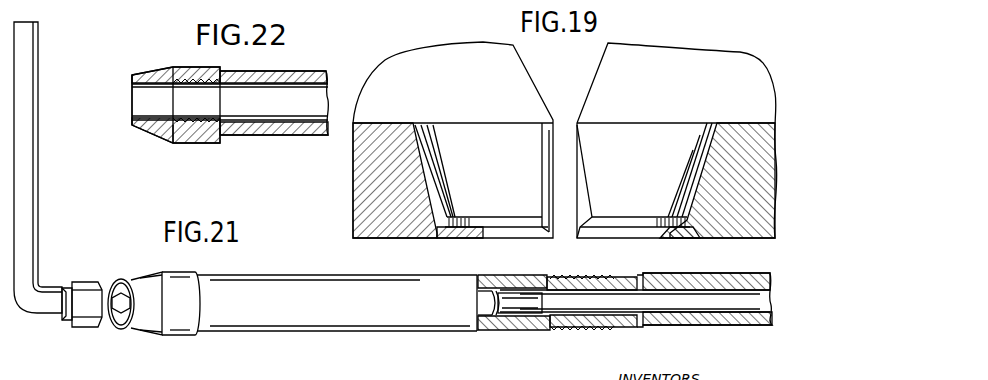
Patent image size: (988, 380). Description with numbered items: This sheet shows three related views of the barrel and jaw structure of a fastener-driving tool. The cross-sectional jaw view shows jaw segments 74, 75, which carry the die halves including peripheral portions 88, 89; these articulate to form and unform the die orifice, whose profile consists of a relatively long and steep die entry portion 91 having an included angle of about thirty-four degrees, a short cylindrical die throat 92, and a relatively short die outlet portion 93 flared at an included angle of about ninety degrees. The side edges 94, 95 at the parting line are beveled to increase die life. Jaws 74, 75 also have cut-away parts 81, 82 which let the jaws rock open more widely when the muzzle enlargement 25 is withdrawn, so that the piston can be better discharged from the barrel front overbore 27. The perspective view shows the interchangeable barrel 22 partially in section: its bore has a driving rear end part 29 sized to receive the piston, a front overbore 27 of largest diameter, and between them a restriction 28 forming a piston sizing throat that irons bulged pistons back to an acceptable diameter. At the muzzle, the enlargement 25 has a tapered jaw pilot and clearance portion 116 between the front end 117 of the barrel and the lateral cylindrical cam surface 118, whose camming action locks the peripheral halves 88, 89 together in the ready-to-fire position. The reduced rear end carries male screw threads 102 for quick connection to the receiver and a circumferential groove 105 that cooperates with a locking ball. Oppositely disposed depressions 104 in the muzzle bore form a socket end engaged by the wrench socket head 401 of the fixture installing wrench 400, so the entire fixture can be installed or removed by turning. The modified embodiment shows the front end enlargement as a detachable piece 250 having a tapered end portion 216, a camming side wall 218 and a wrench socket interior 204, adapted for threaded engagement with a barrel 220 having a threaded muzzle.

In FIG. 21, the interchangeable barrel 22 is at (325, 322).
In FIG. 21, the muzzle enlargement 25 is at (200, 268).
In FIG. 21, the barrel front overbore 27 is at (483, 301).
In FIG. 21, the restriction forming piston sizing throat 28 is at (527, 309).
In FIG. 21, the rear end part of barrel bore 29 is at (688, 311).
In FIG. 19, the jaw segment 74 is at (418, 45).
In FIG. 19, the jaw segment 75 is at (723, 43).
In FIG. 19, the cut-away part 81 is at (533, 65).
In FIG. 19, the cut-away part 82 is at (590, 66).
In FIG. 19, the orifice peripheral portion 88 is at (383, 123).
In FIG. 19, the orifice peripheral portion 89 is at (760, 117).
In FIG. 19, the die entry portion 91 is at (425, 157).
In FIG. 19, the die throat 92 is at (460, 220).
In FIG. 19, the die outlet portion 93 is at (483, 233).
In FIG. 19, the side edge at parting line 94 is at (545, 202).
In FIG. 19, the side edge at parting line 95 is at (577, 202).
In FIG. 21, the male screw threads 102 is at (570, 331).
In FIG. 21, the depressions forming socket end 104 is at (113, 322).
In FIG. 21, the circumferential groove 105 is at (638, 322).
In FIG. 21, the tapered jaw pilot and jaw clearance portion 116 is at (143, 333).
In FIG. 21, the front end of barrel 117 is at (117, 288).
In FIG. 21, the lateral cylindrical cam surface 118 is at (180, 336).
In FIG. 22, the wrench socket interior 204 is at (138, 97).
In FIG. 22, the tapered end portion 216 is at (163, 142).
In FIG. 22, the camming side wall 218 is at (187, 143).
In FIG. 22, the barrel 220 is at (298, 132).
In FIG. 22, the detachable piece 250 is at (206, 152).
In FIG. 21, the fixture installing wrench 400 is at (40, 282).
In FIG. 21, the wrench socket head 401 is at (82, 328).